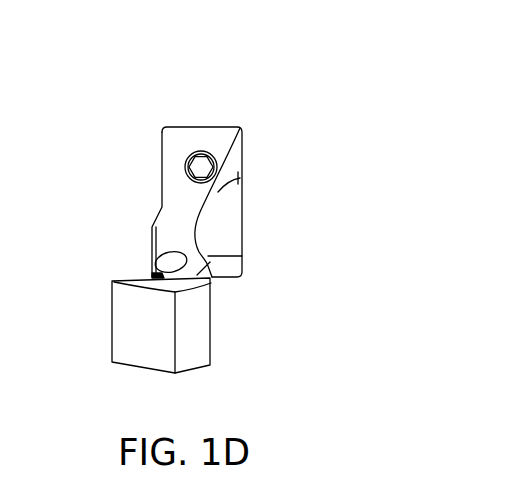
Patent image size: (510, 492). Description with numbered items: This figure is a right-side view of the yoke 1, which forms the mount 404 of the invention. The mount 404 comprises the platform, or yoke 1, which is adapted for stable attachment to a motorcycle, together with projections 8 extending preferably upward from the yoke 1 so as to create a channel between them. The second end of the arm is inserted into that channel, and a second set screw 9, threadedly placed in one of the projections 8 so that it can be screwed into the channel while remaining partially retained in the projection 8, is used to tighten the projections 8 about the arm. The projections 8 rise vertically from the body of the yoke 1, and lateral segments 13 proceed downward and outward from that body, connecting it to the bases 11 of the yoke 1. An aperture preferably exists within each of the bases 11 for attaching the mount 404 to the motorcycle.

The mount 404 is at (299, 73).
The yoke 1 is at (306, 167).
The projections 8 is at (173, 147).
The second set screw 9 is at (203, 163).
The lateral segments 13 is at (167, 240).
The bases 11 is at (123, 321).